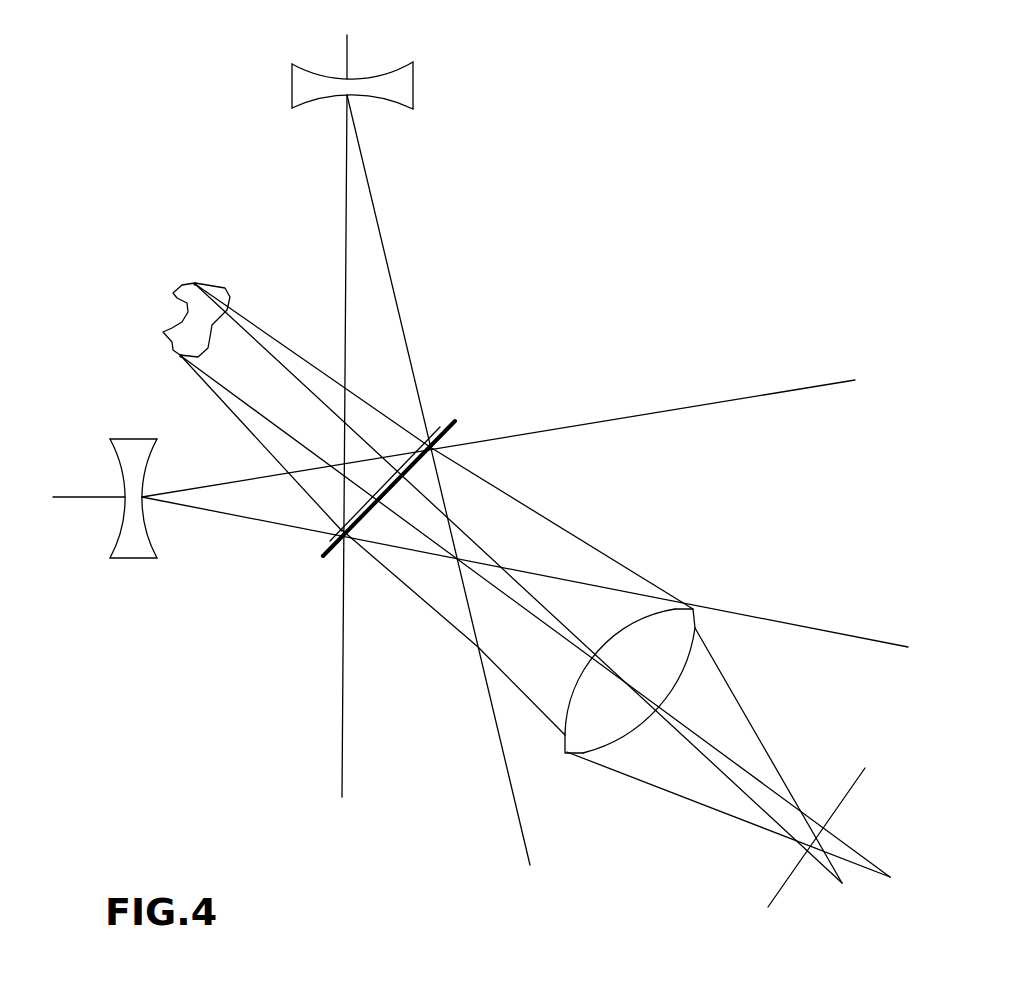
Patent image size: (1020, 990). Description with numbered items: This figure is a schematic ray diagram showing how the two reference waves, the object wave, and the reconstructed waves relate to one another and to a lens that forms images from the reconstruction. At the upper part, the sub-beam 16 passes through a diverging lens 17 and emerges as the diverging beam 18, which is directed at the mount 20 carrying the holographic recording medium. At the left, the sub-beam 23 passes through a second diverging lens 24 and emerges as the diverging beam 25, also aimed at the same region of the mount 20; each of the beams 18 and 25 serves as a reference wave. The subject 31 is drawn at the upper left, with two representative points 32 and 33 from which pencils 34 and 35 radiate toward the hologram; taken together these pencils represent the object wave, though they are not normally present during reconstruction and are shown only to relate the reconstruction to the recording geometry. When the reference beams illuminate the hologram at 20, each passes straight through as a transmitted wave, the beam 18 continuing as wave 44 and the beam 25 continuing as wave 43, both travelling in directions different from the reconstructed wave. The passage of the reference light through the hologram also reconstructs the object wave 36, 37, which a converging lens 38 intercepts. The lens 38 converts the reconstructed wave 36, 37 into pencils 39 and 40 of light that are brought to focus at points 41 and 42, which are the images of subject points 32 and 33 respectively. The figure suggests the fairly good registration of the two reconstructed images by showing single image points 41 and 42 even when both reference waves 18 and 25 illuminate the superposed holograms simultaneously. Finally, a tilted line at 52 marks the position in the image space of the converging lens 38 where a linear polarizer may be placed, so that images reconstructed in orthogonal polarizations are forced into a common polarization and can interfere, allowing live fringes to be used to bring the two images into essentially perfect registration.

The sub-beam 16 is at (347, 58).
The diverging lens 17 is at (413, 101).
The diverging beam 18 is at (390, 282).
The holographic recording medium mount 20 is at (333, 558).
The sub-beam 23 is at (108, 495).
The diverging lens 24 is at (143, 558).
The diverging beam 25 is at (262, 518).
The subject 31 is at (226, 300).
The representative point of subject 32 is at (193, 282).
The representative point of subject 33 is at (180, 356).
The pencil 34 is at (304, 359).
The pencil 35 is at (259, 440).
The reconstructed wave 36 is at (543, 519).
The reconstructed wave 37 is at (492, 638).
The converging lens 38 is at (574, 752).
The pencil of light 39 is at (750, 725).
The pencil of light 40 is at (702, 788).
The image point 41 is at (842, 883).
The image point 42 is at (906, 884).
The transmitted reference wave 43 is at (726, 412).
The transmitted reference wave 44 is at (348, 756).
The linear polarizer position 52 is at (849, 792).